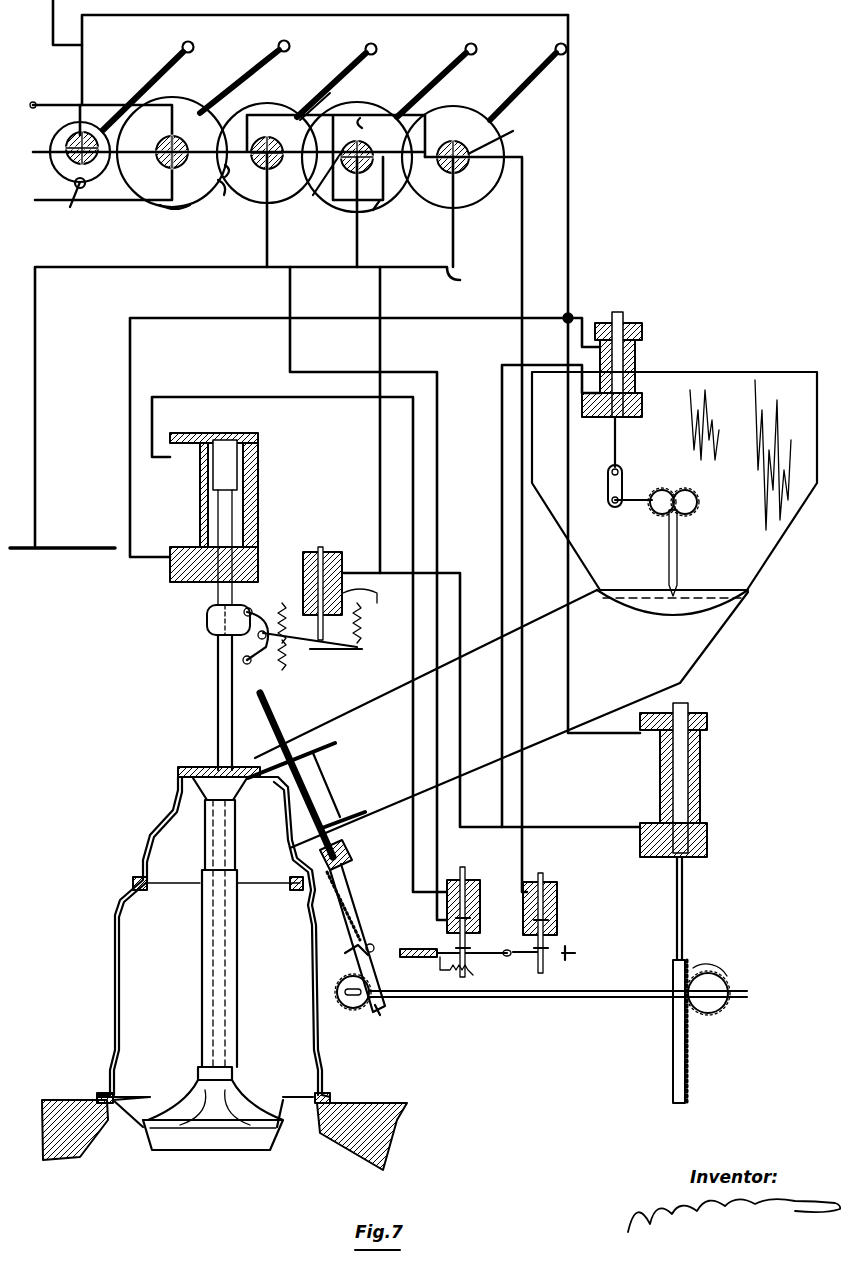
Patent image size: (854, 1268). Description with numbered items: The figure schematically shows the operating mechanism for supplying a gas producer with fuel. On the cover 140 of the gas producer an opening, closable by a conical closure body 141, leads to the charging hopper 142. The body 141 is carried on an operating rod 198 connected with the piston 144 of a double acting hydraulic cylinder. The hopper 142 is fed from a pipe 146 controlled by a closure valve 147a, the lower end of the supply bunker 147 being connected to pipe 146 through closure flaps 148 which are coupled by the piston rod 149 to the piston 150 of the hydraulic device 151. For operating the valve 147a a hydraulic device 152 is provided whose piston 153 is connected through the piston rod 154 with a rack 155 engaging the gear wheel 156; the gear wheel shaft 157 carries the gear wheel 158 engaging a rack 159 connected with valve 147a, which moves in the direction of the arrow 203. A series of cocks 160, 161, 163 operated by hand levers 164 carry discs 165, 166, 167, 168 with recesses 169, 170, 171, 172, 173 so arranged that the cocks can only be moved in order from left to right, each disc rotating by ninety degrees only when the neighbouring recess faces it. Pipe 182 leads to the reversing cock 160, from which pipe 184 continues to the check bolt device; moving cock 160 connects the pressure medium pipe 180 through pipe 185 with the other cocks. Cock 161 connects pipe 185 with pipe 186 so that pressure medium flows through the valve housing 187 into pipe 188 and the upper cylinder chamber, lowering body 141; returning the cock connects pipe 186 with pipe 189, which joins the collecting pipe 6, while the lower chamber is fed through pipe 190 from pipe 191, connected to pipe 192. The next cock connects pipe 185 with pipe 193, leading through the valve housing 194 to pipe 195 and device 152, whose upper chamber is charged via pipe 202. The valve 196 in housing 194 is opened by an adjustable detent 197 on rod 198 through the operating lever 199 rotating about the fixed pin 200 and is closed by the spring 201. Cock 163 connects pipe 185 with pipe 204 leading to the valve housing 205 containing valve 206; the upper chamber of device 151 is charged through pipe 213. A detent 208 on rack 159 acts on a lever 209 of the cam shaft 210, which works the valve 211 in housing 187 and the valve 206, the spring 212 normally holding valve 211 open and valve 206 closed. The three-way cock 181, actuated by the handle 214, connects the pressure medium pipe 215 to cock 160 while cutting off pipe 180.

The pipe 6 is at (60, 550).
The cover 140 is at (367, 1117).
The conical body 141 is at (205, 1140).
The charging hopper 142 is at (150, 993).
The piston 144 is at (235, 462).
The pipe 146 is at (371, 727).
The supply bunker 147 is at (738, 385).
The closure valve 147a is at (307, 760).
The closure flaps 148 is at (683, 603).
The piston rod 149 is at (620, 440).
The piston 150 is at (643, 396).
The hydraulic device 151 is at (644, 350).
The hydraulic device 152 is at (707, 772).
The piston 153 is at (707, 828).
The piston rod 154 is at (684, 910).
The rack 155 is at (687, 1065).
The gear wheel 156 is at (712, 1015).
The gear wheel shaft 157 is at (567, 995).
The gear wheel 158 is at (360, 1006).
The rack 159 is at (356, 895).
The cock 160 is at (200, 140).
The cock 161 is at (268, 147).
The cock 163 is at (509, 138).
The hand levers 164 is at (372, 50).
The disc 165 is at (187, 110).
The disc 166 is at (277, 107).
The disc 167 is at (373, 113).
The disc 168 is at (470, 113).
The recess 169 is at (187, 210).
The recess 170 is at (223, 190).
The recess 171 is at (330, 93).
The recess 172 is at (310, 235).
The recess 173 is at (373, 210).
The pressure medium pipe 180 is at (40, 157).
The cock 181 is at (88, 135).
The pipe 182 is at (78, 207).
The pipe 184 is at (33, 108).
The pipe 185 is at (230, 171).
The pipe 186 is at (292, 292).
The valve housing 187 is at (466, 882).
The pipe 188 is at (297, 397).
The pipe 189 is at (267, 232).
The pipe 190 is at (440, 320).
The pipe 191 is at (572, 134).
The pipe 192 is at (53, 46).
The pipe 193 is at (383, 296).
The valve housing 194 is at (330, 553).
The pipe 195 is at (461, 573).
The valve 196 is at (363, 645).
The adjustable detent 197 is at (207, 617).
The operating rod 198 is at (218, 665).
The operating lever 199 is at (313, 642).
The fixed pin 200 is at (263, 612).
The spring 201 is at (365, 649).
The pipe 202 is at (570, 660).
The arrow 203 is at (413, 1011).
The pipe 204 is at (524, 240).
The valve housing 205 is at (558, 925).
The valve 206 is at (558, 892).
The detent 208 is at (348, 889).
The lever 209 is at (345, 955).
The cam shaft 210 is at (407, 945).
The valve 211 is at (480, 920).
The spring 212 is at (476, 976).
The pipe 213 is at (570, 318).
The handle 214 is at (173, 55).
The pressure medium pipe 215 is at (157, 17).